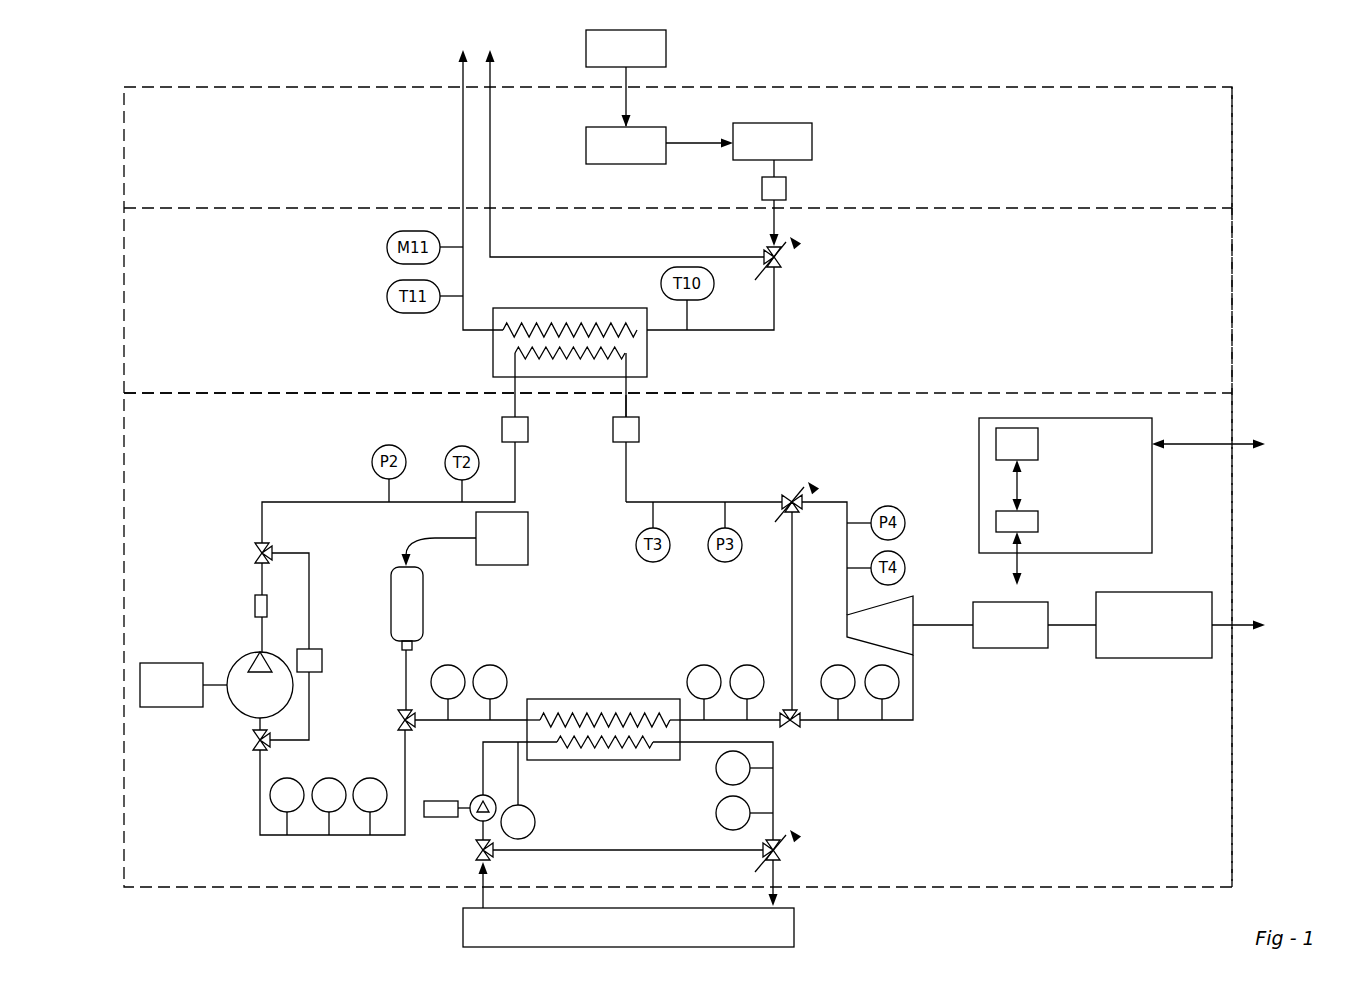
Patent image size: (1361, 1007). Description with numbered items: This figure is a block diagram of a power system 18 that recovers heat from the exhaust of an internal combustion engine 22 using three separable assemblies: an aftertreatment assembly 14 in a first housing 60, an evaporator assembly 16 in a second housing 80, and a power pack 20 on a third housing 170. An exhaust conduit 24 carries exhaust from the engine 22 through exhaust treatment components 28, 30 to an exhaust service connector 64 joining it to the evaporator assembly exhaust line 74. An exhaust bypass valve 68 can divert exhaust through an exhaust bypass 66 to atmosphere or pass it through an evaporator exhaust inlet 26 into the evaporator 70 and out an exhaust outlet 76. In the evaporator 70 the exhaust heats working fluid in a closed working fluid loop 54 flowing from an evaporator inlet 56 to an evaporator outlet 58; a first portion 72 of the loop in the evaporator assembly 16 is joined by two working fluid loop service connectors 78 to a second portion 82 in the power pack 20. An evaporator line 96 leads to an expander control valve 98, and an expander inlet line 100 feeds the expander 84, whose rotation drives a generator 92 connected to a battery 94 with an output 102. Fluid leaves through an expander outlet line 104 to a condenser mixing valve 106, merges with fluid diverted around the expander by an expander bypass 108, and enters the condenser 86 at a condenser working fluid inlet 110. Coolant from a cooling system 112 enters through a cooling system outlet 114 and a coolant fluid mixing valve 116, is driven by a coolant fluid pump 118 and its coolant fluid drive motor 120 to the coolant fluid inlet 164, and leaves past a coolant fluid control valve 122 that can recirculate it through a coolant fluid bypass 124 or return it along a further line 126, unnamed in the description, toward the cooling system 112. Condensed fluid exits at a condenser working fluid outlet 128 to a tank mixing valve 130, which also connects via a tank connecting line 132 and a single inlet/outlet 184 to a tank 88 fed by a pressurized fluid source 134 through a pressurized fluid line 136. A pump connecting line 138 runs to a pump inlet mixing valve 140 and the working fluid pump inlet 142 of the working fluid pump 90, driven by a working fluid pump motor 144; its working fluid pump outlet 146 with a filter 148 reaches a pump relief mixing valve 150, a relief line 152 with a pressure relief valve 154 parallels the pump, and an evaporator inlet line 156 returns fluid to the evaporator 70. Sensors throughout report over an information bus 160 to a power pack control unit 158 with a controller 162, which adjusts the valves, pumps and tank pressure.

The aftertreatment assembly 14 is at (1235, 158).
The evaporator assembly 16 is at (1235, 308).
The power system 18 is at (112, 168).
The power pack 20 is at (1235, 420).
The internal combustion engine 22 is at (626, 48).
The exhaust conduit 24 is at (630, 79).
The evaporator exhaust inlet 26 is at (776, 313).
The exhaust treatment component 28 is at (659, 145).
The exhaust treatment component 30 is at (772, 141).
The working fluid loop 54 is at (633, 407).
The evaporator inlet 56 is at (510, 395).
The evaporator outlet 58 is at (628, 387).
The first housing 60 is at (1232, 168).
The exhaust service connector 64 is at (786, 193).
The exhaust bypass 66 is at (625, 255).
The exhaust bypass valve 68 is at (782, 262).
The evaporator 70 is at (647, 343).
The first portion of working fluid loop 72 is at (506, 383).
The evaporator assembly exhaust line 74 is at (776, 218).
The exhaust outlet 76 is at (463, 224).
The working fluid loop service connector 78 is at (500, 432).
The second housing 80 is at (1232, 320).
The second portion of working fluid loop 82 is at (633, 467).
The expander 84 is at (910, 625).
The condenser 86 is at (585, 698).
The tank 88 is at (407, 604).
The working fluid pump 90 is at (233, 670).
The generator 92 is at (1034, 625).
The battery 94 is at (1180, 625).
The evaporator line 96 is at (715, 500).
The expander control valve 98 is at (791, 493).
The expander inlet line 100 is at (834, 502).
The output 102 is at (1252, 642).
The expander outlet line 104 is at (913, 728).
The condenser mixing valve 106 is at (792, 733).
The expander bypass 108 is at (790, 636).
The condenser working fluid inlet 110 is at (717, 723).
The cooling system 112 is at (455, 932).
The cooling system outlet 114 is at (485, 893).
The coolant fluid mixing valve 116 is at (473, 850).
The coolant fluid pump 118 is at (476, 798).
The coolant fluid drive motor 120 is at (446, 800).
The coolant fluid control valve 122 is at (782, 852).
The coolant fluid bypass 124 is at (620, 848).
The coolant return line 126 is at (780, 880).
The condenser working fluid outlet 128 is at (512, 718).
The tank mixing valve 130 is at (398, 722).
The tank connecting line 132 is at (404, 665).
The pressurized fluid source 134 is at (502, 538).
The pressurized fluid line 136 is at (425, 520).
The pump connecting line 138 is at (278, 837).
The pump inlet mixing valve 140 is at (253, 745).
The working fluid pump inlet 142 is at (253, 722).
The working fluid pump motor 144 is at (183, 685).
The working fluid pump outlet 146 is at (260, 643).
The filter 148 is at (255, 598).
The pump relief mixing valve 150 is at (255, 548).
The relief line 152 is at (311, 604).
The pressure relief valve 154 is at (322, 660).
The evaporator inlet line 156 is at (320, 500).
The power pack control unit 158 is at (1058, 432).
The information bus 160 is at (1035, 523).
The controller 162 is at (1030, 452).
The coolant fluid inlet 164 is at (498, 745).
The third housing 170 is at (1232, 480).
The inlet/outlet 184 is at (414, 645).